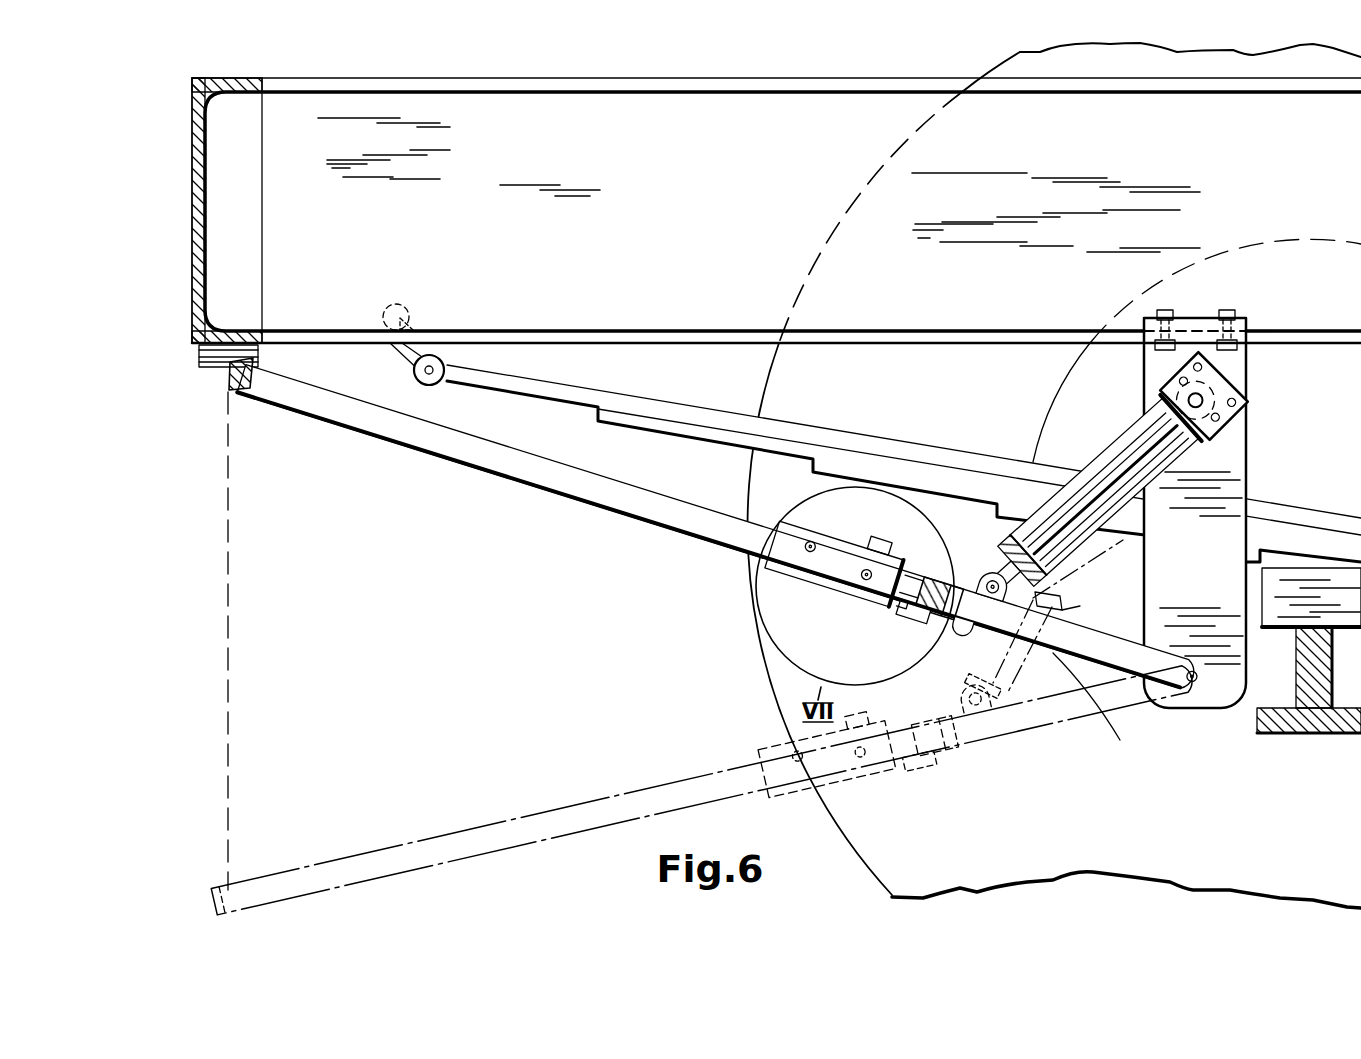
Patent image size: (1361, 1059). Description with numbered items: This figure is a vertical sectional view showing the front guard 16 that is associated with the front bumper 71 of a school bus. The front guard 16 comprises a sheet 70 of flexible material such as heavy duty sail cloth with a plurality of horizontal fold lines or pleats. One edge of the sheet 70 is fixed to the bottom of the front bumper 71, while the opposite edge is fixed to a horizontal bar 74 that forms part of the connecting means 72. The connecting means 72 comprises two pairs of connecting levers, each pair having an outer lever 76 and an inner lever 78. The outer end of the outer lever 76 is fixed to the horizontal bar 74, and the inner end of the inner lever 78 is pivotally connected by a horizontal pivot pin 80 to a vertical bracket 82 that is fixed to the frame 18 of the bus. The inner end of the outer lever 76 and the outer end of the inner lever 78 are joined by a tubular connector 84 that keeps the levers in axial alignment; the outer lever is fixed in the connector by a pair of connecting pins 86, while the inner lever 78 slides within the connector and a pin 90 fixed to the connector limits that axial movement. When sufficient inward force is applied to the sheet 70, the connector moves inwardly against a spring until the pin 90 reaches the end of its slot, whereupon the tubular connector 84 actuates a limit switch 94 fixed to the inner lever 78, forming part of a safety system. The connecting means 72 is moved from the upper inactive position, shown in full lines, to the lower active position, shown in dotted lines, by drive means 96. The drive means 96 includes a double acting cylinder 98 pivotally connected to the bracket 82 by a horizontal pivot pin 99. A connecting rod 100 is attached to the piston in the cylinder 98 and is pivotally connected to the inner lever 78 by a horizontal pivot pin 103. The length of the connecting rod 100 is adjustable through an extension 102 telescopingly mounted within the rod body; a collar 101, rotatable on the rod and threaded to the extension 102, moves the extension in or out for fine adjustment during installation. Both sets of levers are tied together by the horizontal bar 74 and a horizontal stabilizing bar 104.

The front guard 16 is at (215, 691).
The frame 18 is at (531, 100).
The sheet 70 is at (212, 372).
The front bumper 71 is at (190, 238).
The connecting means 72 is at (627, 522).
The horizontal bar 74 is at (248, 392).
The outer lever 76 is at (462, 448).
The inner lever 78 is at (948, 628).
The horizontal pivot pin 80 is at (1193, 692).
The vertical bracket 82 is at (1248, 455).
The tubular connector 84 is at (787, 560).
The connecting pins 86 is at (810, 553).
The pin 90 is at (866, 573).
The limit switch 94 is at (910, 616).
The drive means 96 is at (1089, 482).
The double acting cylinder 98 is at (1122, 450).
The horizontal pivot pin 99 is at (1202, 398).
The connecting rod 100 is at (1016, 692).
The collar 101 is at (1003, 560).
The extension 102 is at (1062, 606).
The horizontal pivot pin 103 is at (964, 602).
The horizontal stabilizing bar 104 is at (932, 590).